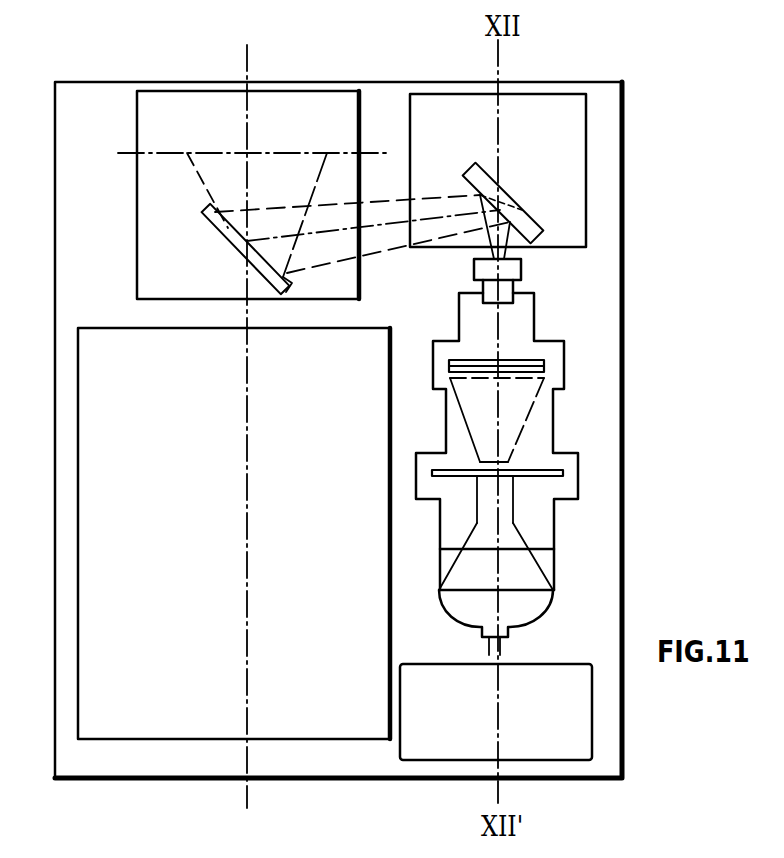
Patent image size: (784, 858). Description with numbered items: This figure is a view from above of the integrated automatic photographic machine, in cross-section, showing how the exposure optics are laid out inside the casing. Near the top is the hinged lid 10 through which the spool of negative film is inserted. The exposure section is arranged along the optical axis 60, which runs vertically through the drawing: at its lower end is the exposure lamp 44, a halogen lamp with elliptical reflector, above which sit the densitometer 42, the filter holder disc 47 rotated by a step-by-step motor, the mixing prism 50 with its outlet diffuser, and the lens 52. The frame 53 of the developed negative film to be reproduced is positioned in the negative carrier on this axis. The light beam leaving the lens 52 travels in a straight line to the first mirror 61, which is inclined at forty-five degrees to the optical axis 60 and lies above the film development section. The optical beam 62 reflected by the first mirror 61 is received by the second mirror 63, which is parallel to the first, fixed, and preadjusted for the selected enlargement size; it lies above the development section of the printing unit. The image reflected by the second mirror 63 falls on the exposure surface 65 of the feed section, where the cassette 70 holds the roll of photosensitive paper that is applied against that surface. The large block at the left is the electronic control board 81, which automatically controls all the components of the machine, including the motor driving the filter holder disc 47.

The hinged lid 10 is at (563, 136).
The densitometer 42 is at (568, 727).
The exposure lamp 44 is at (521, 604).
The filter holder disc 47 is at (565, 473).
The mixing prism 50 is at (514, 414).
The lens 52 is at (516, 268).
The frame of the film 53 is at (538, 367).
The optical axis 60 is at (503, 65).
The first mirror 61 is at (516, 206).
The optical beam 62 is at (203, 183).
The second mirror 63 is at (232, 232).
The exposure surface 65 is at (305, 149).
The cassette 70 is at (318, 108).
The electronic control board 81 is at (100, 554).